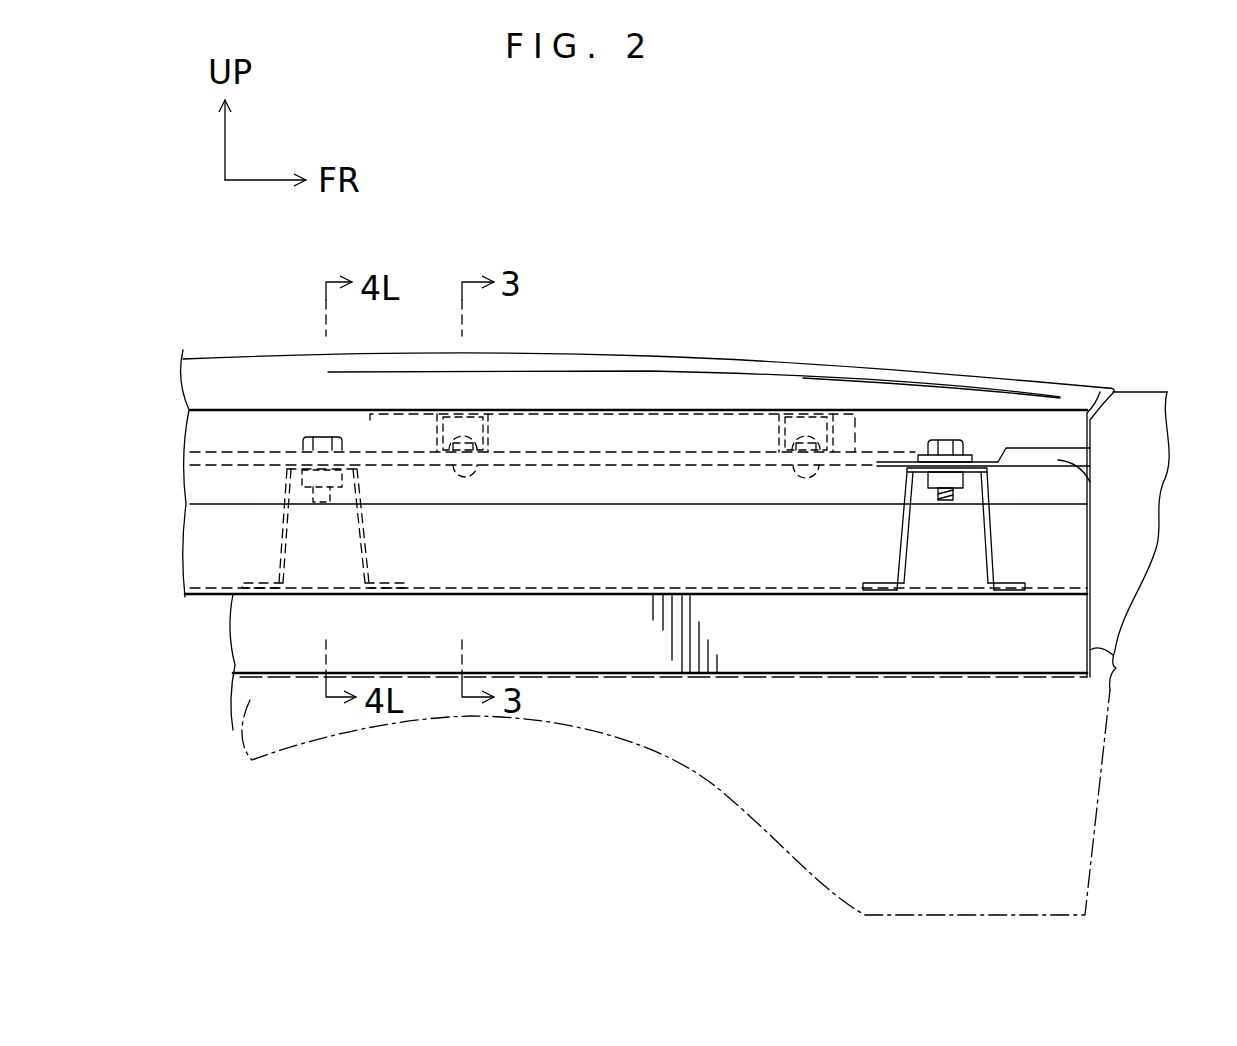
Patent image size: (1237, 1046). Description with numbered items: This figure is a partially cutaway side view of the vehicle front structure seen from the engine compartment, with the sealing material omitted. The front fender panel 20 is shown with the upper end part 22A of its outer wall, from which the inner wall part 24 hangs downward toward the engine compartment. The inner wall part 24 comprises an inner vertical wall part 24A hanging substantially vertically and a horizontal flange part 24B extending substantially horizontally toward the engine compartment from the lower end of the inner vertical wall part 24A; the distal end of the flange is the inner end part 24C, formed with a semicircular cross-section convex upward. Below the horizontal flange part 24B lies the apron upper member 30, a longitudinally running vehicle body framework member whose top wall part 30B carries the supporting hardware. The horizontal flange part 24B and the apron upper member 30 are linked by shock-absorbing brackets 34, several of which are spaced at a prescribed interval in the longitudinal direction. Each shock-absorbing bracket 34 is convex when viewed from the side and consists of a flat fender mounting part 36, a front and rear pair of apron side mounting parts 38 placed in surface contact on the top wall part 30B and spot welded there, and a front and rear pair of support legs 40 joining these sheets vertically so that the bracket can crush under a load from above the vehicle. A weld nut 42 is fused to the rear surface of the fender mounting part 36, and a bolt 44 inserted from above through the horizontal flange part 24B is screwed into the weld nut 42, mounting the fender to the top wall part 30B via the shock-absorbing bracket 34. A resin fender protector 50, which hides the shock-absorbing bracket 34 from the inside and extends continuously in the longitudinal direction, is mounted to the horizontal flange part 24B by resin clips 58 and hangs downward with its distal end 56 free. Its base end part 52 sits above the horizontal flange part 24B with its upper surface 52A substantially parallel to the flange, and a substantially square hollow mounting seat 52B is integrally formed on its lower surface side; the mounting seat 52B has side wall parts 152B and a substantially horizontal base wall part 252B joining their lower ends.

The front fender panel 20 is at (886, 347).
The upper end part of the outer wall part 22A is at (610, 352).
The inner wall part 24 is at (907, 400).
The inner vertical wall part 24A is at (978, 403).
The horizontal flange part 24B is at (873, 468).
The inner end part 24C is at (1160, 485).
The apron upper member 30 is at (907, 641).
The top wall part 30B is at (1057, 585).
The shock-absorbing bracket 34 is at (372, 530).
The fender mounting part 36 is at (924, 490).
The apron side mounting part 38 is at (873, 594).
The support leg 40 is at (903, 533).
The weld nut 42 is at (957, 490).
The bolt 44 is at (930, 446).
The fender protector 50 is at (492, 551).
The base end part 52 is at (768, 394).
The upper surface 52A is at (737, 410).
The mounting seat 52B is at (494, 430).
The distal end 56 is at (556, 597).
The clip 58 is at (469, 483).
The side wall part 152B is at (779, 432).
The base wall part 252B is at (793, 477).